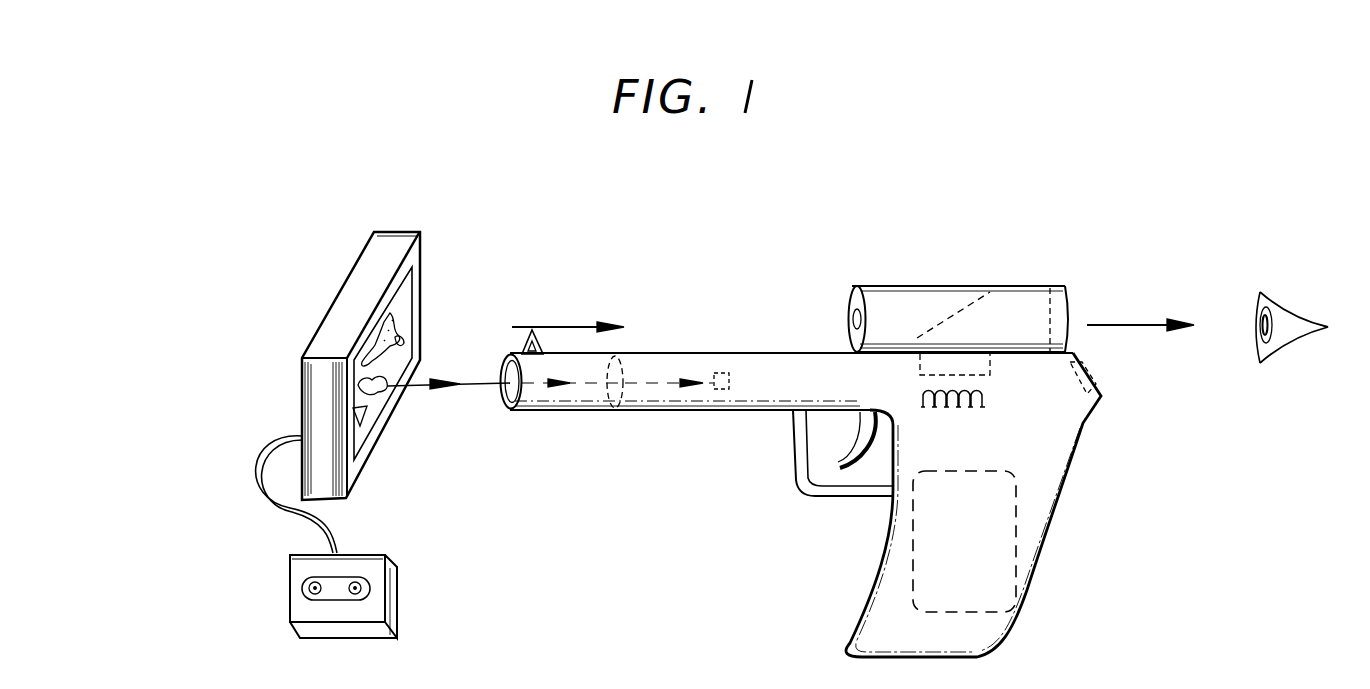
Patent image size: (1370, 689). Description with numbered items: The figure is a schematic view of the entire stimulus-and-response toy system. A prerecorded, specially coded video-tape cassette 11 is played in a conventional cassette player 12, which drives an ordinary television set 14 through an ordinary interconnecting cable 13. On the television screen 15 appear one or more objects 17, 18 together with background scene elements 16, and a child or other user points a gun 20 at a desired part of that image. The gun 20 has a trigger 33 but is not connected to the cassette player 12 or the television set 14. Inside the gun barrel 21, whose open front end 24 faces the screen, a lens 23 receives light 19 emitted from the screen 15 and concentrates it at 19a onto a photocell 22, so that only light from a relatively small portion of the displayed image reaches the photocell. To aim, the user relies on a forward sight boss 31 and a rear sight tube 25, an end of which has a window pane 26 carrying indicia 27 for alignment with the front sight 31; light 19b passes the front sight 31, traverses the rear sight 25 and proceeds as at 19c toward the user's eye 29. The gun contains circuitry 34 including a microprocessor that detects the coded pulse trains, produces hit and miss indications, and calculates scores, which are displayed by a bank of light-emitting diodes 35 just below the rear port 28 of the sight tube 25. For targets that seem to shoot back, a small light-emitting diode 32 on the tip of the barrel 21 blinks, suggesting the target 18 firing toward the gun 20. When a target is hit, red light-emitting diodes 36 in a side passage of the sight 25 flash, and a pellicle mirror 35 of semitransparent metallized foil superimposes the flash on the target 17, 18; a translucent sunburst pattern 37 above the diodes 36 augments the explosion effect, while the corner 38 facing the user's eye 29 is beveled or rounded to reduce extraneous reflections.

The video-tape cassette 11 is at (310, 585).
The cassette player 12 is at (390, 603).
The interconnecting cable 13 is at (262, 490).
The television set 14 is at (392, 243).
The television screen 15 is at (405, 291).
The background scene elements 16 is at (398, 343).
The object 17 is at (378, 390).
The object 18 is at (380, 326).
The light 19 is at (496, 383).
The light concentrated onto photocell 19a is at (660, 385).
The light passing front sight 19b is at (567, 327).
The light toward user's eye 19c is at (1137, 322).
The gun 20 is at (703, 333).
The gun barrel 21 is at (727, 412).
The photocell 22 is at (723, 373).
The lens 23 is at (607, 380).
The barrel opening 24 is at (502, 413).
The rear sight tube 25 is at (898, 286).
The window pane 26 is at (852, 293).
The indicia 27 is at (850, 317).
The rear port 28 is at (1068, 283).
The user's eye 29 is at (1283, 313).
The forward sight boss 31 is at (519, 348).
The light-emitting diode 32 is at (545, 350).
The trigger 33 is at (835, 465).
The circuitry 34 is at (1016, 494).
The bank of light-emitting diodes 35 is at (970, 307).
The red light-emitting diodes 36 is at (983, 391).
The sunburst pattern 37 is at (969, 373).
The corner 38 is at (917, 357).